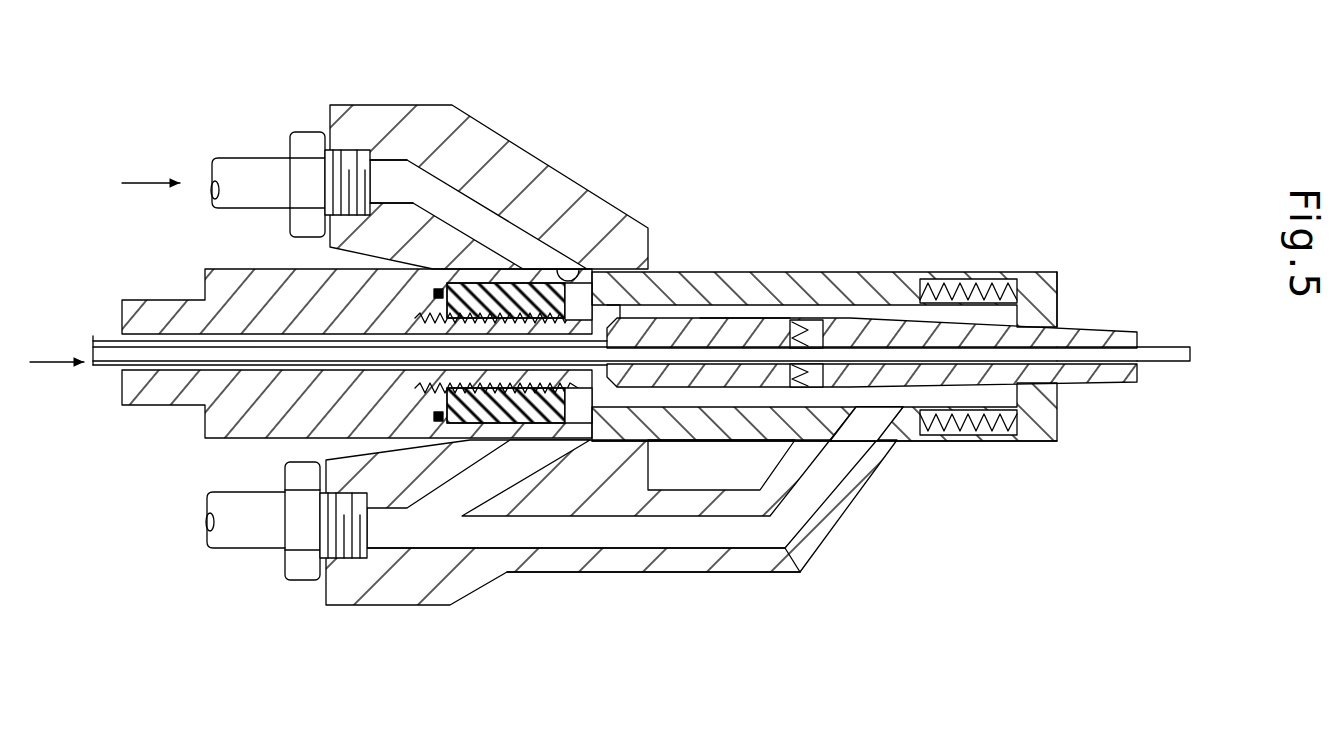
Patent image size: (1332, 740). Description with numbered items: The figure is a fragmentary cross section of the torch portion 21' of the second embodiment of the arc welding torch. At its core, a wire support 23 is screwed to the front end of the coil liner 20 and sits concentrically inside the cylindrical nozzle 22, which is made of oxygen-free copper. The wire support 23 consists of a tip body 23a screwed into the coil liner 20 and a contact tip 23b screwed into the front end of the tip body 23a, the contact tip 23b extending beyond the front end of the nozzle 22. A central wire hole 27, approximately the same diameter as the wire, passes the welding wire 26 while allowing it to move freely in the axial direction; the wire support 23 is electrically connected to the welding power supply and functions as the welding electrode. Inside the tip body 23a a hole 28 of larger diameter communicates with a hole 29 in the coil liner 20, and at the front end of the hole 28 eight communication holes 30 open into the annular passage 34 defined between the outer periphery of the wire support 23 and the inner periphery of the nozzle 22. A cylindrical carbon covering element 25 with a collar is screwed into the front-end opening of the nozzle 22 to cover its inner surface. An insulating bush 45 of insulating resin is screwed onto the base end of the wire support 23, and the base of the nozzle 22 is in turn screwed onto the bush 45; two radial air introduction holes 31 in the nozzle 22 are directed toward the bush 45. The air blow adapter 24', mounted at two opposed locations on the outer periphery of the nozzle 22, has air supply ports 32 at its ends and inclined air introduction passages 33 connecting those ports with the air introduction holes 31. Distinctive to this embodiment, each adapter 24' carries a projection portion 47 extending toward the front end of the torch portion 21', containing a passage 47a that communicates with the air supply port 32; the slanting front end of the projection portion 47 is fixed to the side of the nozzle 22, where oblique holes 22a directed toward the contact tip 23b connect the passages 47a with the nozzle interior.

The coil liner 20 is at (232, 268).
The torch portion 21' is at (793, 105).
The nozzle 22 is at (808, 272).
The holes 22a is at (860, 452).
The wire support 23 is at (860, 306).
The tip body 23a is at (742, 322).
The contact tip 23b is at (970, 333).
The air blow adapter 24' is at (611, 574).
The covering element 25 is at (1047, 277).
The welding wire 26 is at (1142, 344).
The wire hole 27 is at (1088, 366).
The hole 28 is at (598, 275).
The hole 29 is at (177, 365).
The communication holes 30 is at (672, 300).
The air introduction holes 31 is at (583, 280).
The air supply port 32 is at (330, 147).
The air introduction passage 33 is at (468, 215).
The annular passage 34 is at (793, 316).
The insulating bush 45 is at (527, 275).
The projection portion 47 is at (760, 562).
The passage 47a is at (622, 517).